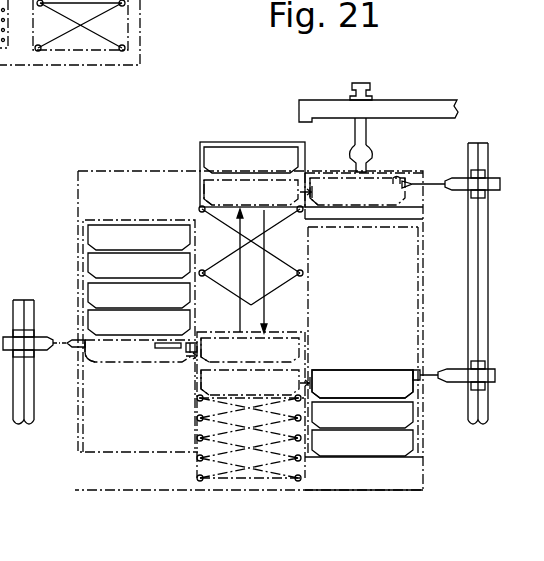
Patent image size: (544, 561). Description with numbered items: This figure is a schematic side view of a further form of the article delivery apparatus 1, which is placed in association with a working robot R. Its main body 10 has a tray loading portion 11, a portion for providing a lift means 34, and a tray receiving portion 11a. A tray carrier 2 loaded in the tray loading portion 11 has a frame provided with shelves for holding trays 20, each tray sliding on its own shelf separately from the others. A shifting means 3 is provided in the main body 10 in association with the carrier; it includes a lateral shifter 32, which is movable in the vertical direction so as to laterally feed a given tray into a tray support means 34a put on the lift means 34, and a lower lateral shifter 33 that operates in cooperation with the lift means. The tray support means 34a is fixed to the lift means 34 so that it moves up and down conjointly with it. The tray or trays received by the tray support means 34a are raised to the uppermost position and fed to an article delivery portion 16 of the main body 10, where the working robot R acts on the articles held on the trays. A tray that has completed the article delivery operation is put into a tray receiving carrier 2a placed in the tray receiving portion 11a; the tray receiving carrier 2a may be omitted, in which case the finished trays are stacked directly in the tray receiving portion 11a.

The article delivery apparatus 1 is at (97, 162).
The tray carrier 2 is at (96, 214).
The tray receiving carrier 2a is at (424, 257).
The shifting means 3 is at (27, 293).
The main body 10 is at (181, 168).
The tray loading portion 11 is at (80, 236).
The tray receiving portion 11a is at (407, 330).
The article delivery portion 16 is at (376, 177).
The tray 20 is at (140, 234).
The lateral shifter 32 is at (42, 337).
The lower lateral shifter 33 is at (458, 378).
The lift means 34 is at (261, 478).
The tray support means 34a is at (229, 140).
The working robot R is at (402, 108).